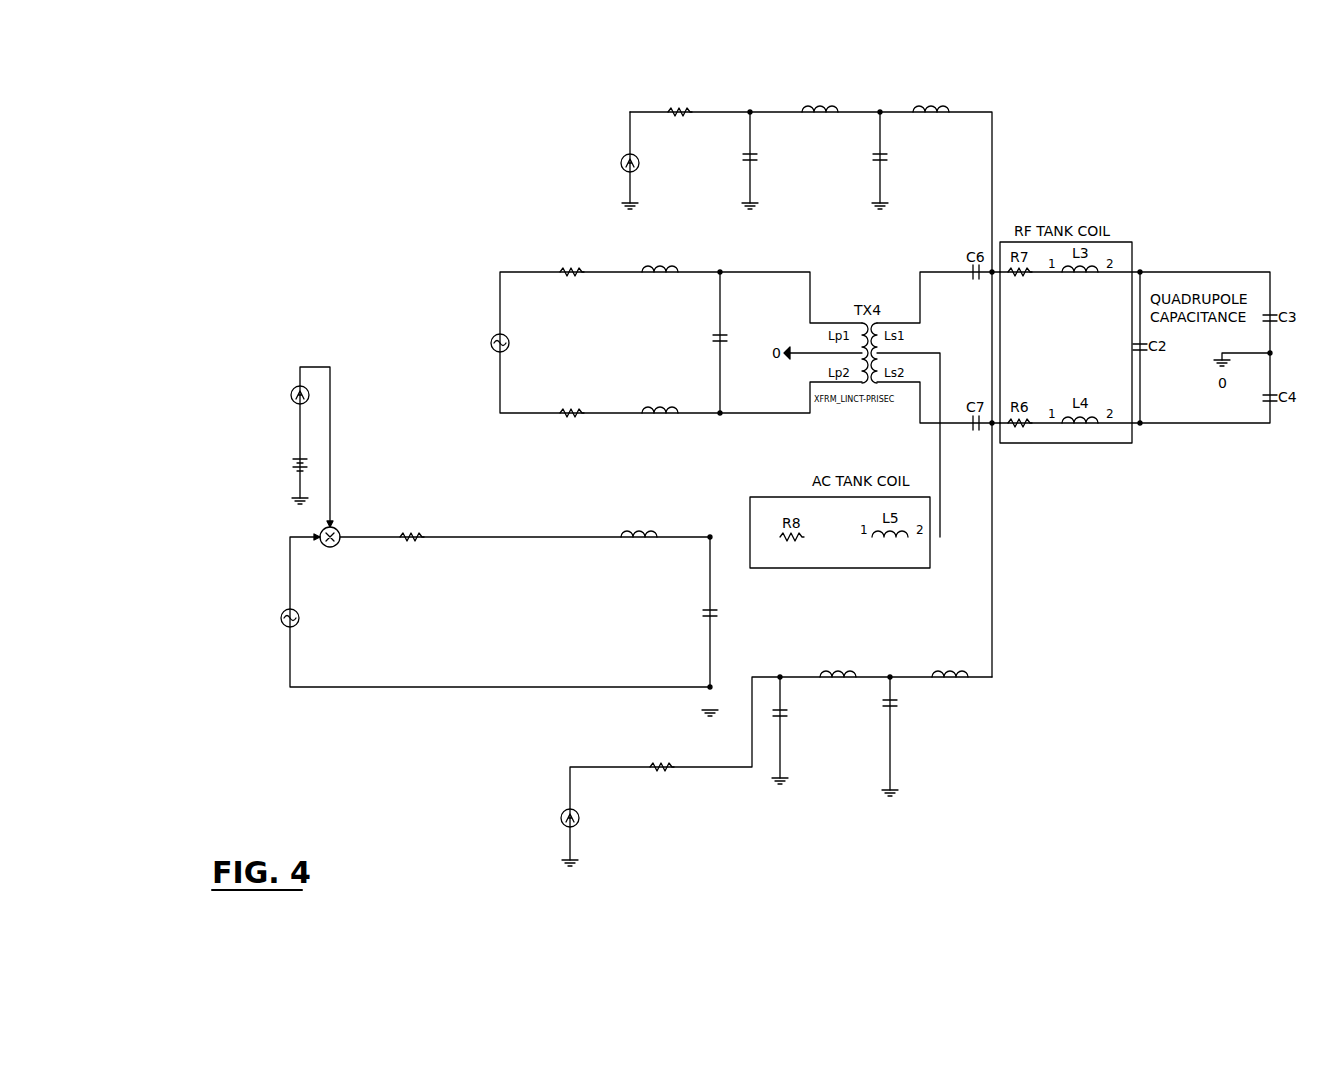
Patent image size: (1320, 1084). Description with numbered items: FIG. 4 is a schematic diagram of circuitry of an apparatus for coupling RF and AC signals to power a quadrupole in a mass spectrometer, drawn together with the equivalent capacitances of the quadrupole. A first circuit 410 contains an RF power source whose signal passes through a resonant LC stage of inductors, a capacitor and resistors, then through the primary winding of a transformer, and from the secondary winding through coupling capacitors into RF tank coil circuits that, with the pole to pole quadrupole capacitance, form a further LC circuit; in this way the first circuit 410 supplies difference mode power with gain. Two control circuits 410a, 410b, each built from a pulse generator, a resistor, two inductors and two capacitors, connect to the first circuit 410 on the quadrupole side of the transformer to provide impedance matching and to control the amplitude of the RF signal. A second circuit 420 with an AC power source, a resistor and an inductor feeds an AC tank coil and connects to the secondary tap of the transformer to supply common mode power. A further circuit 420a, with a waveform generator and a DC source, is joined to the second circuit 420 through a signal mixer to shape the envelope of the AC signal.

The circuit for providing further control of the RF signal 410a is at (530, 105).
The first circuit 410 is at (398, 278).
The circuit for providing further control of the AC signal 420a is at (183, 383).
The second circuit 420 is at (203, 557).
The circuit for providing further control of the RF signal 410b is at (1025, 663).